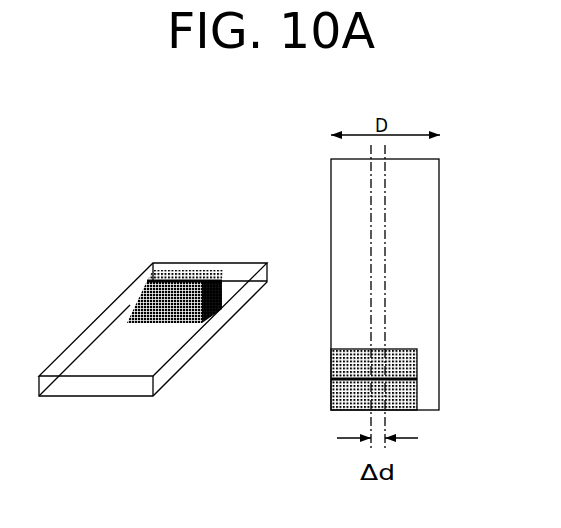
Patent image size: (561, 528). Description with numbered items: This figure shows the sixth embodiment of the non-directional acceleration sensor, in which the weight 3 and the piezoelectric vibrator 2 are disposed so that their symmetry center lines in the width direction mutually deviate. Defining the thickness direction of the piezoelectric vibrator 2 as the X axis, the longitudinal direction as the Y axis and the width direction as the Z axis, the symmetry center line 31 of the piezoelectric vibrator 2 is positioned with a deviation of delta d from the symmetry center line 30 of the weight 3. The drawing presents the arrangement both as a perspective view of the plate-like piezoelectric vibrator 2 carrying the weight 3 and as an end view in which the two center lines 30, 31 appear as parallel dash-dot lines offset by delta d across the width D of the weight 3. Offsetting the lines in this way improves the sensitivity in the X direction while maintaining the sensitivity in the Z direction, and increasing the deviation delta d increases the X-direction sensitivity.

The piezoelectric vibrator 2 is at (215, 307).
The weight 3 is at (170, 382).
The symmetry center line of weight 30 is at (383, 192).
The symmetry center line of piezoelectric vibrator 31 is at (370, 227).